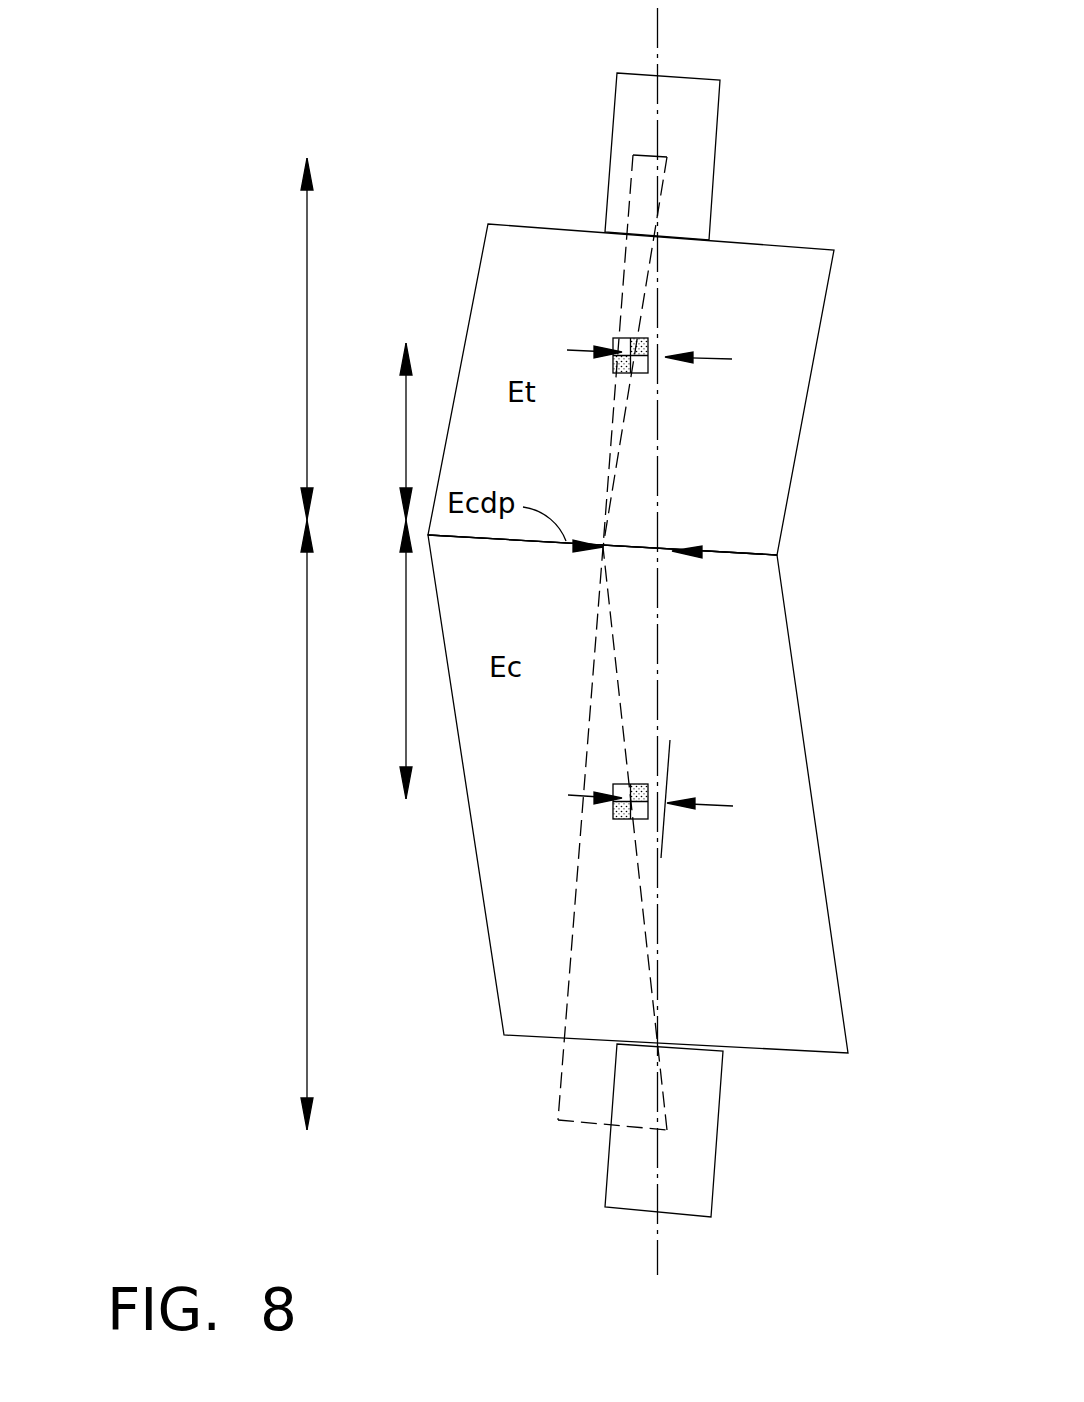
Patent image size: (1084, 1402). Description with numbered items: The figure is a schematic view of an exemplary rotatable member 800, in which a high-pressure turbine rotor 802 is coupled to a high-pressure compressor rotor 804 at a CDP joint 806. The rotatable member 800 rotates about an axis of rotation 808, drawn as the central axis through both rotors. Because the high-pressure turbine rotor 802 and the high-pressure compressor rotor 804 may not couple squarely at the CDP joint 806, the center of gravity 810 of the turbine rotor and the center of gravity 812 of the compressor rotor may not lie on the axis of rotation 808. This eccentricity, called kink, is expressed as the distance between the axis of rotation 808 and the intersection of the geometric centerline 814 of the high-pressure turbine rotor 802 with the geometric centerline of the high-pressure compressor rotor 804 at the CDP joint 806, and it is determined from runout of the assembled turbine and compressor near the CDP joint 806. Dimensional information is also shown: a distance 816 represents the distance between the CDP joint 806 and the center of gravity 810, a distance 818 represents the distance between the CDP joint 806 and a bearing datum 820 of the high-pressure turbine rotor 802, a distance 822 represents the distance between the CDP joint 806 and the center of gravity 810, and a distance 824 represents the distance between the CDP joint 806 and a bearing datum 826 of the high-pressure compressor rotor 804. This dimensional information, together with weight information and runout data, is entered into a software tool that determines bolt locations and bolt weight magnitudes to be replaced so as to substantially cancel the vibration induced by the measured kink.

The rotatable member 800 is at (410, 60).
The high-pressure turbine rotor 802 is at (805, 408).
The high-pressure compressor rotor 804 is at (802, 733).
The CDP joint 806 is at (777, 556).
The axis of rotation 808 is at (658, 47).
The center of gravity of HPTR 810 is at (648, 345).
The center of gravity of HPCR 812 is at (648, 784).
The geometric centerline 814 is at (645, 298).
The distance 816 is at (406, 437).
The distance 818 is at (307, 292).
The bearing datum 820 is at (748, 162).
The distance 822 is at (406, 680).
The distance 824 is at (307, 970).
The bearing datum 826 is at (748, 1132).